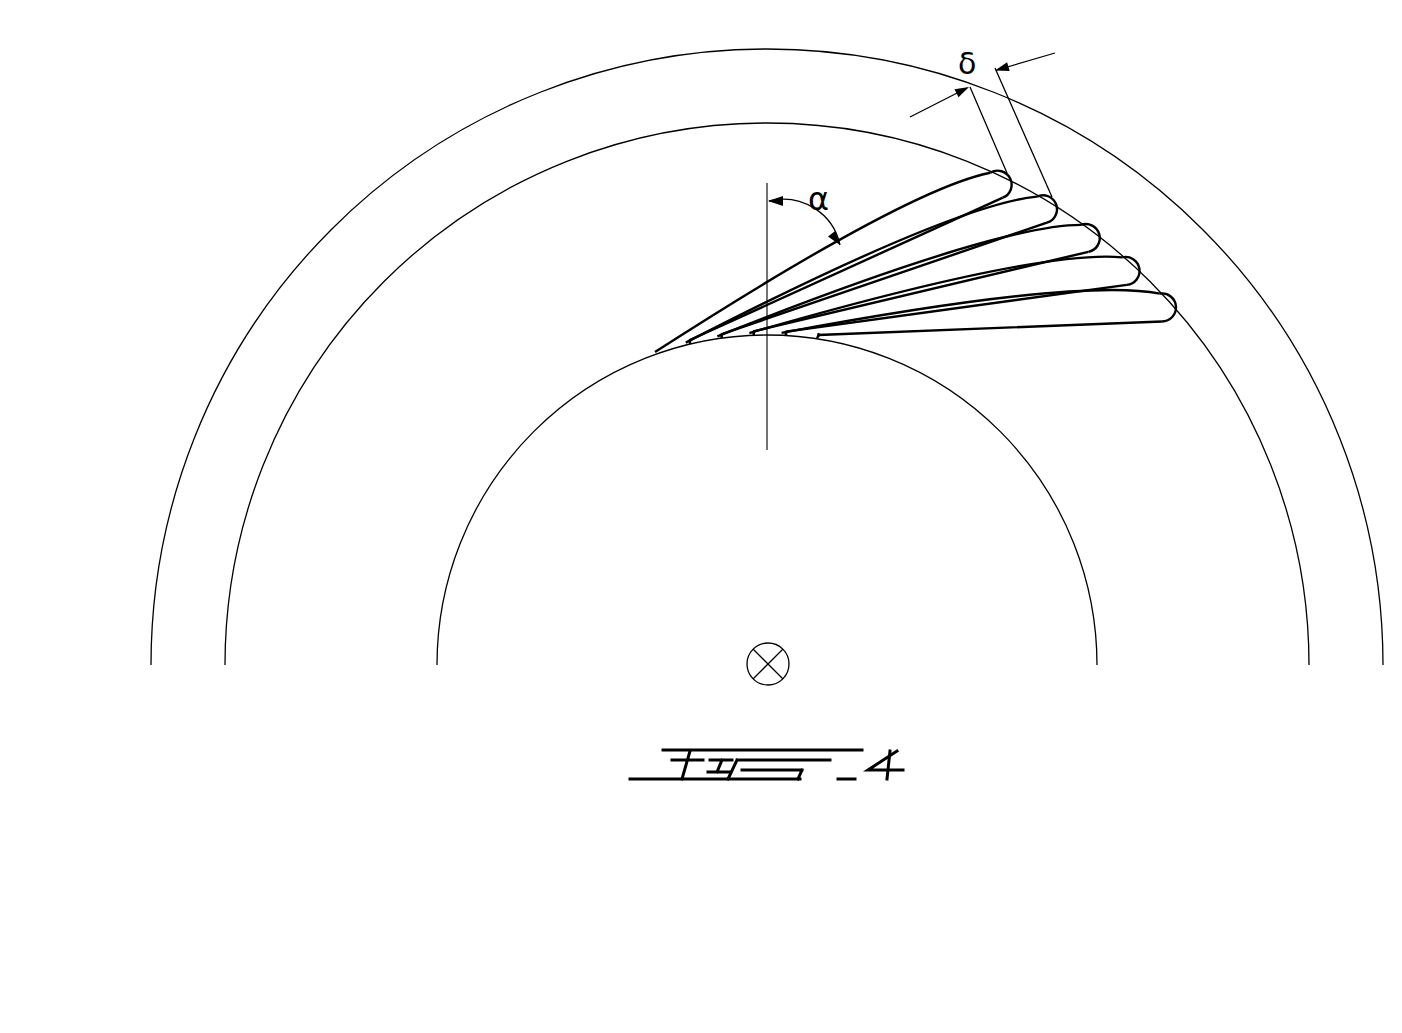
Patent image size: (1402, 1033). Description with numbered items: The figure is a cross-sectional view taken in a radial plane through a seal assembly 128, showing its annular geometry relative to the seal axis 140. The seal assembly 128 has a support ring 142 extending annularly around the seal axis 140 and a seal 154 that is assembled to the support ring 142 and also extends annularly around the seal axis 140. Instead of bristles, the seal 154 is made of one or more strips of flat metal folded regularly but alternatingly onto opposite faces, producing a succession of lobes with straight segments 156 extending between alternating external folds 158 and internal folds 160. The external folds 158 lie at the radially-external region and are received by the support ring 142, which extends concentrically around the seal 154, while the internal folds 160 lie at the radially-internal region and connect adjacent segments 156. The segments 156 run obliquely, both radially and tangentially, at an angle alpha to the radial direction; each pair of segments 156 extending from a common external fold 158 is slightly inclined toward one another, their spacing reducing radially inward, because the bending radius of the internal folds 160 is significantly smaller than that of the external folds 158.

The seal assembly 128 is at (417, 158).
The seal axis 140 is at (769, 643).
The support ring 142 is at (452, 562).
The seal 154 is at (1108, 307).
The segments 156 is at (987, 282).
The external folds 158 is at (1133, 257).
The internal folds 160 is at (819, 336).